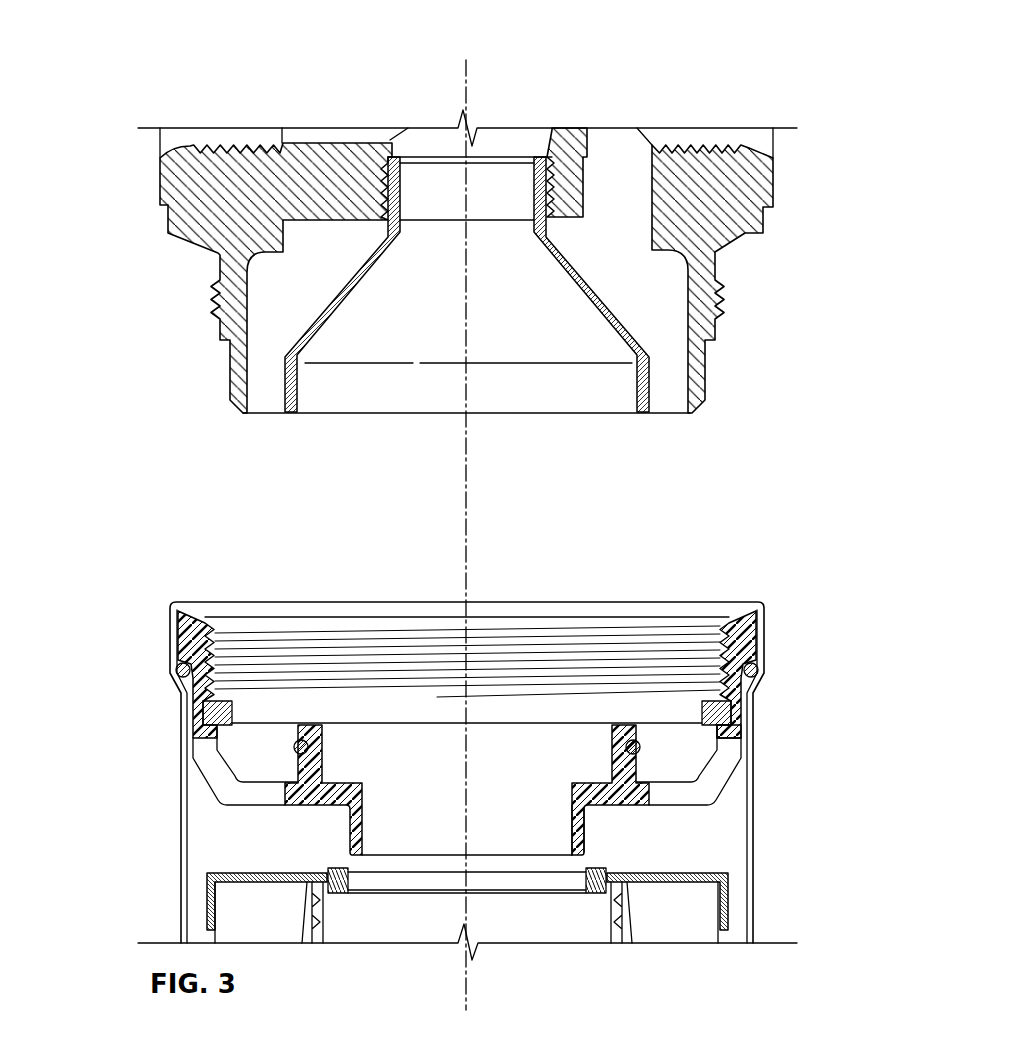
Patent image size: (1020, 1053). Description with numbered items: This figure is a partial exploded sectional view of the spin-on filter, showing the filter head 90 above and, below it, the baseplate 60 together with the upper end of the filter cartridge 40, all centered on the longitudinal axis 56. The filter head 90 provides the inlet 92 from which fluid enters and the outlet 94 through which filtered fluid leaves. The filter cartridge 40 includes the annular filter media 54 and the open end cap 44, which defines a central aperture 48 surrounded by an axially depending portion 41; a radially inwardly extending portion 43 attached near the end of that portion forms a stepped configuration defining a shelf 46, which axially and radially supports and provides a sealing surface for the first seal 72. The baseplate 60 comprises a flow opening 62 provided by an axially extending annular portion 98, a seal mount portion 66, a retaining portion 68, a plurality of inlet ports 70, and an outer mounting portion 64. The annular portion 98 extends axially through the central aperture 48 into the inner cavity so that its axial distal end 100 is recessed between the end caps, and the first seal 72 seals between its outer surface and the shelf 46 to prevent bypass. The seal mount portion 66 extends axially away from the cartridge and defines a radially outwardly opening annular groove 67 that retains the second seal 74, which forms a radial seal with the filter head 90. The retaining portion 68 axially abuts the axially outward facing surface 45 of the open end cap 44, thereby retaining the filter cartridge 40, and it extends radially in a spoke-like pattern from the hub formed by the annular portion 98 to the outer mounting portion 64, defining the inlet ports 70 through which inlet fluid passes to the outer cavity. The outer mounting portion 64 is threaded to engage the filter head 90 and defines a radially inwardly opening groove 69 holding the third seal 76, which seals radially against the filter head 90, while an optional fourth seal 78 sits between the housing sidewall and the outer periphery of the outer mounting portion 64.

The filter cartridge 40 is at (737, 873).
The axially depending portion 41 is at (387, 876).
The radially inwardly extending portion 43 is at (348, 896).
The open end cap 44 is at (728, 905).
The axially outward facing surface 45 is at (247, 873).
The shelf 46 is at (562, 882).
The central aperture 48 is at (430, 908).
The filter media 54 is at (698, 920).
The longitudinal axis 56 is at (468, 70).
The baseplate 60 is at (770, 592).
The flow opening 62 is at (358, 838).
The outer mounting portion 64 is at (745, 645).
The seal mount portion 66 is at (621, 760).
The annular groove 67 is at (628, 745).
The retaining portion 68 is at (240, 803).
The radially inwardly opening groove 69 is at (732, 745).
The inlet ports 70 is at (228, 778).
The first seal 72 is at (332, 878).
The second seal 74 is at (297, 749).
The third seal 76 is at (232, 708).
The fourth seal 78 is at (189, 676).
The filter head 90 is at (138, 157).
The inlet 92 is at (620, 134).
The outlet 94 is at (499, 134).
The annular portion 98 is at (575, 832).
The axial distal end 100 is at (575, 862).